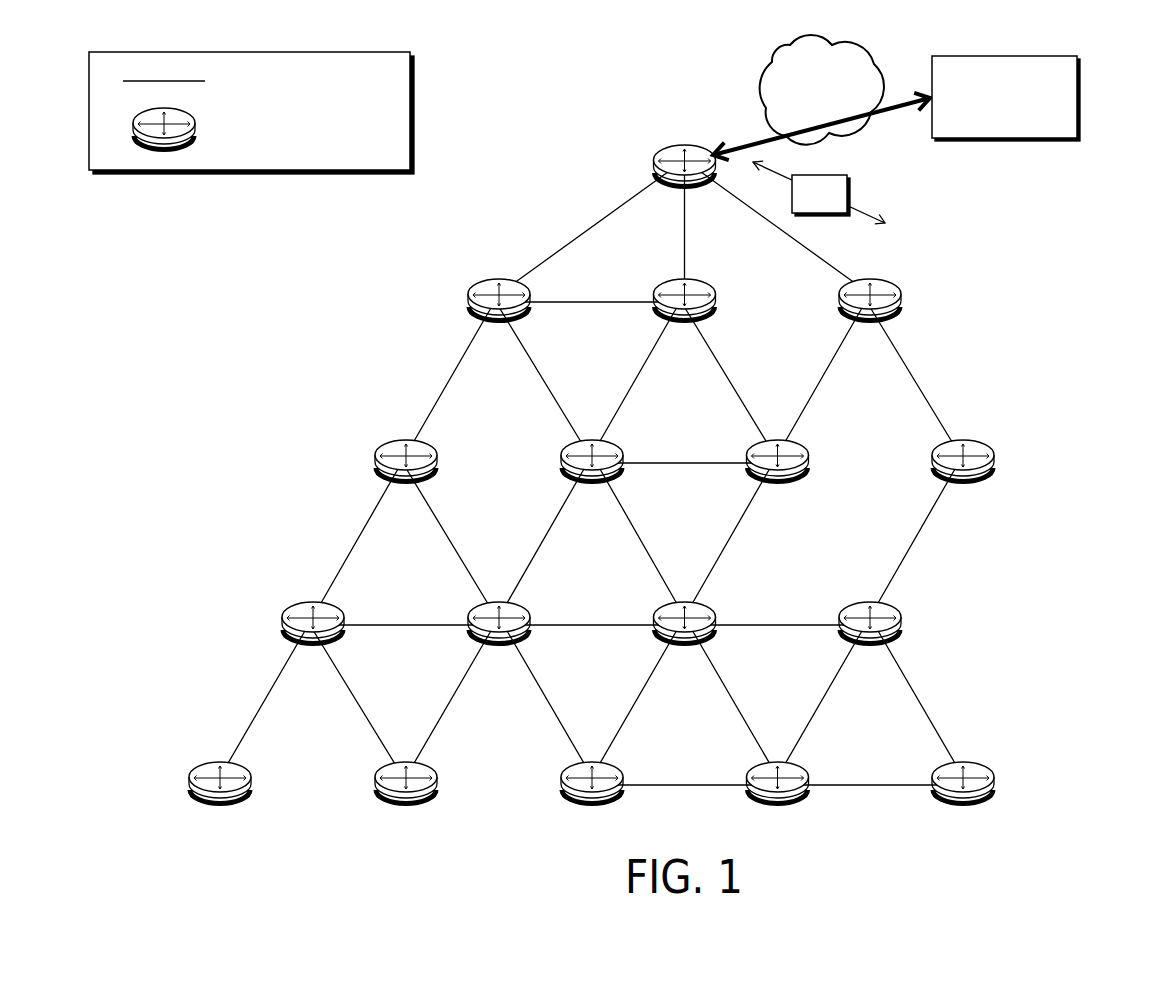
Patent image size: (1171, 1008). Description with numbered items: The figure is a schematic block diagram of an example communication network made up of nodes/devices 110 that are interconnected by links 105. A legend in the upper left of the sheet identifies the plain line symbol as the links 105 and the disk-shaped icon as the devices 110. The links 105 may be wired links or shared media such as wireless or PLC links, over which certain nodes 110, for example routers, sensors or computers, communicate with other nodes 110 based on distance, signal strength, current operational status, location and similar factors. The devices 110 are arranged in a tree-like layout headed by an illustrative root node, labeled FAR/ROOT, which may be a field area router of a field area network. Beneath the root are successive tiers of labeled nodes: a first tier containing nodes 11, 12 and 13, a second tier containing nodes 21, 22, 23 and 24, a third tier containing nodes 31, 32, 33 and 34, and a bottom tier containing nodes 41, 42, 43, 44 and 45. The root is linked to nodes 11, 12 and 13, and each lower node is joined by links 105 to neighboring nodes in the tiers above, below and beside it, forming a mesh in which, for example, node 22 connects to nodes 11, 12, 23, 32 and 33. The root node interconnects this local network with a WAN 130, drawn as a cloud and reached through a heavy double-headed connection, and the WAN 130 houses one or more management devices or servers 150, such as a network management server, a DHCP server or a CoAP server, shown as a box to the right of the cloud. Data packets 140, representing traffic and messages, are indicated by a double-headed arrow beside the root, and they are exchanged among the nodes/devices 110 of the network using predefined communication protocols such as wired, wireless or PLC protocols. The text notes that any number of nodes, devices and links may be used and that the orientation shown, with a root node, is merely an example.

The links 105 is at (526, 418).
The nodes/devices 110 is at (563, 462).
The WAN 130 is at (804, 113).
The data packets 140 is at (802, 205).
The servers 150 is at (986, 122).
The node 11 is at (499, 319).
The node 12 is at (685, 319).
The node 13 is at (870, 319).
The node 21 is at (406, 480).
The node 22 is at (592, 480).
The node 23 is at (778, 480).
The node 24 is at (963, 480).
The node 31 is at (313, 642).
The node 32 is at (499, 642).
The node 33 is at (685, 642).
The node 34 is at (870, 642).
The node 41 is at (220, 802).
The node 42 is at (406, 802).
The node 43 is at (592, 802).
The node 44 is at (778, 802).
The node 45 is at (963, 802).